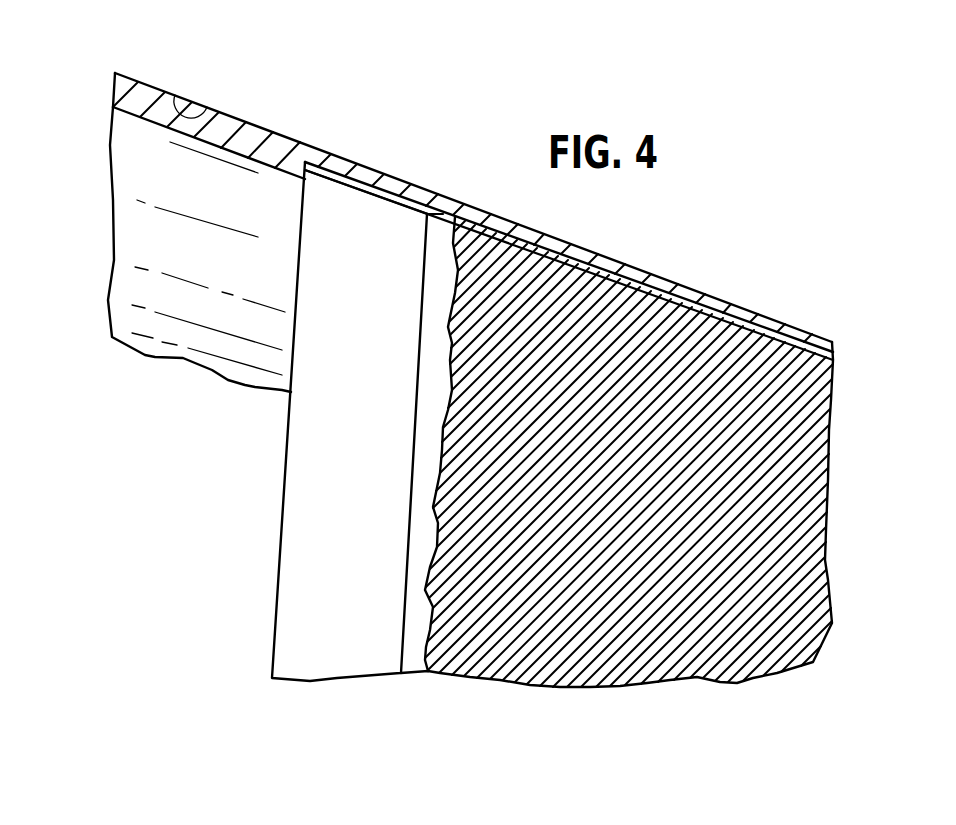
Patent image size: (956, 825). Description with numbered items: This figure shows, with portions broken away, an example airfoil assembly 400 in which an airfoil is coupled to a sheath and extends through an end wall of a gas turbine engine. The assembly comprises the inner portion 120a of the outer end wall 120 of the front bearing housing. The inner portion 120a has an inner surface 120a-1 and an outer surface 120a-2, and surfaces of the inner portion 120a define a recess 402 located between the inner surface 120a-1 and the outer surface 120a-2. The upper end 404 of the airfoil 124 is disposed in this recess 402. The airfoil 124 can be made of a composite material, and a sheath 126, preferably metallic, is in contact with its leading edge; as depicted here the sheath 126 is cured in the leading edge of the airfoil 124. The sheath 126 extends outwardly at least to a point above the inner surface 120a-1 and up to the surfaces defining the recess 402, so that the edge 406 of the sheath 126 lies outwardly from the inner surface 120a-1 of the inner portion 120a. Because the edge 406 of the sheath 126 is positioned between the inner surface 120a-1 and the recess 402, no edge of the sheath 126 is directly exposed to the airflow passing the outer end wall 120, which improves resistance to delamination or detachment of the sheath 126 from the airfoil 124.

The airfoil assembly 400 is at (293, 102).
The outer end wall 120 is at (187, 196).
The inner portion of the outer end wall 120a is at (272, 152).
The inner surface 120a-1 is at (138, 120).
The outer surface 120a-2 is at (207, 108).
The sheath 126 is at (307, 482).
The airfoil 124 is at (412, 668).
The recess 402 is at (443, 214).
The upper end of the airfoil 404 is at (352, 194).
The edge of the sheath 406 is at (363, 190).